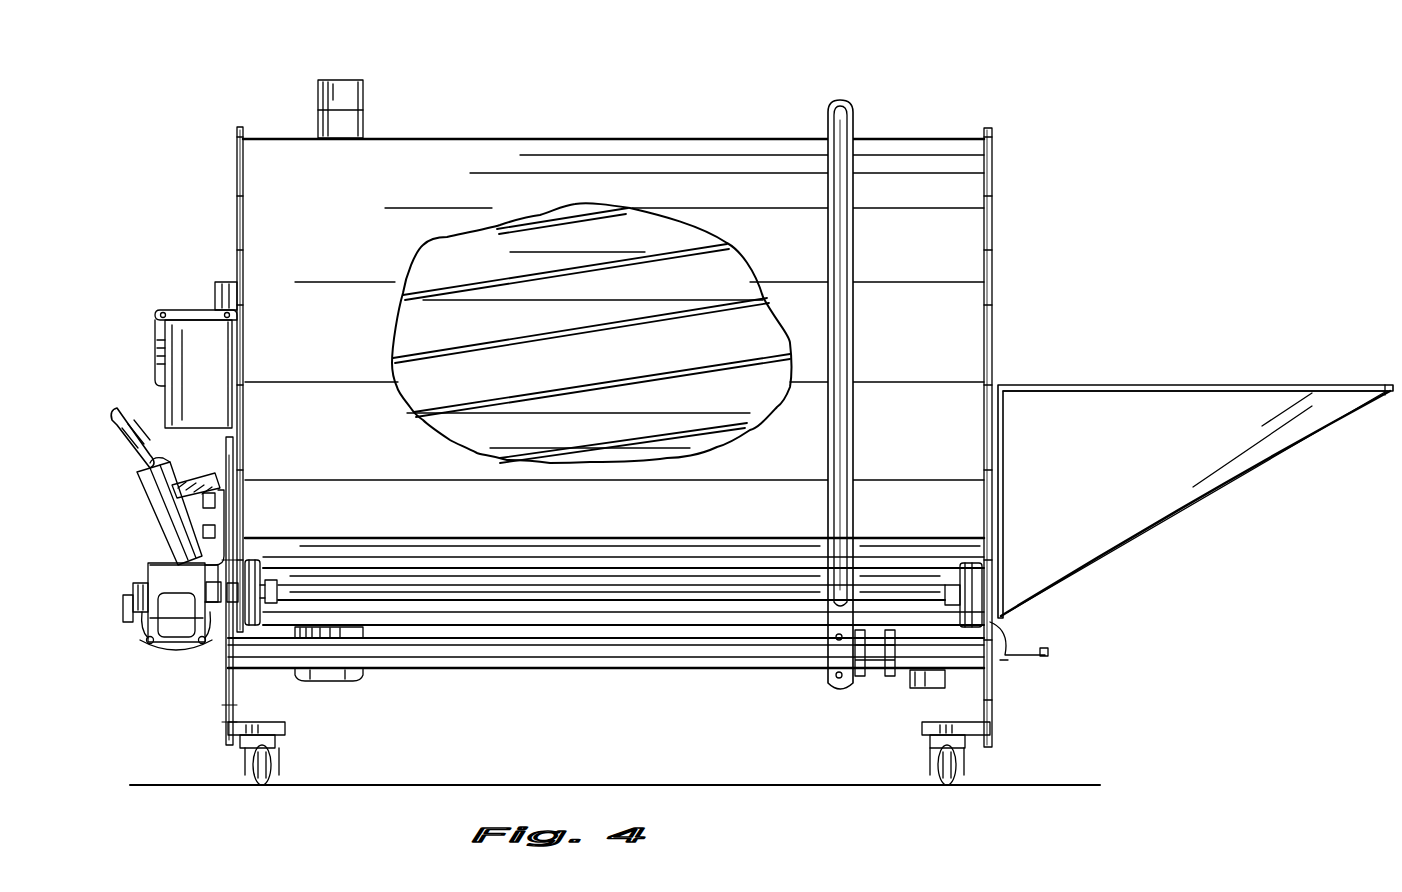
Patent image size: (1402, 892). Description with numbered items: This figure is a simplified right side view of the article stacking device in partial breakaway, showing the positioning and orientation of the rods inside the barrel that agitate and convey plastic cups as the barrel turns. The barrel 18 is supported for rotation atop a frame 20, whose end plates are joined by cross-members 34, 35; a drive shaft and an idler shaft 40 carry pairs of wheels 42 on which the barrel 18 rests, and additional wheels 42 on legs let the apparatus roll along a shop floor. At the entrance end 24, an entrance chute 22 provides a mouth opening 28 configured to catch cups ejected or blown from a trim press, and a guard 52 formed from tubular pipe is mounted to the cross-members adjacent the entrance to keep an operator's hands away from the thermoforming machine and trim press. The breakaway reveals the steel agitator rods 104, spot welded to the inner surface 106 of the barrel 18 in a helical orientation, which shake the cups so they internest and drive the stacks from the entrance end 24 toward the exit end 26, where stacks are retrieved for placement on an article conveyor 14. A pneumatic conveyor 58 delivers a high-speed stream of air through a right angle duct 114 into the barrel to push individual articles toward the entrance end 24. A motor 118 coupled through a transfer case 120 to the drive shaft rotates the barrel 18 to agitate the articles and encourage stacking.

The article conveyor 14 is at (148, 420).
The barrel 18 is at (680, 137).
The frame 20 is at (737, 688).
The entrance chute 22 is at (1245, 480).
The entrance end 24 is at (1002, 218).
The exit end 26 is at (232, 167).
The mouth opening 28 is at (1186, 373).
The cross-member 34 is at (595, 550).
The cross-member 35 is at (655, 652).
The idler shaft 40 is at (500, 595).
The wheels 42 is at (253, 615).
The guard 52 is at (842, 102).
The pneumatic conveyor 58 is at (200, 297).
The agitator rods 104 is at (595, 270).
The inner surface 106 is at (592, 333).
The right angle duct 114 is at (237, 357).
The motor 118 is at (178, 650).
The transfer case 120 is at (145, 618).